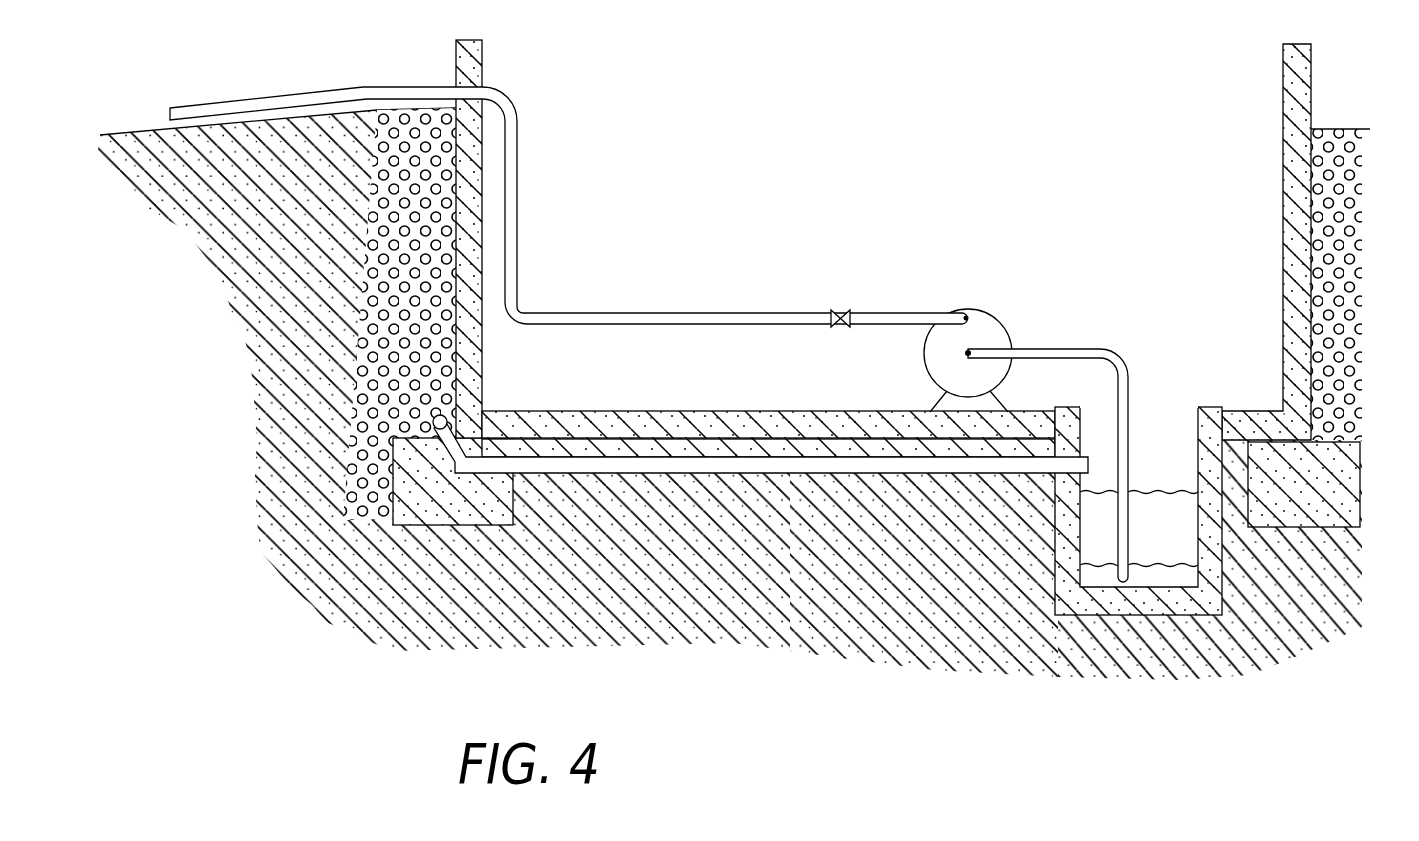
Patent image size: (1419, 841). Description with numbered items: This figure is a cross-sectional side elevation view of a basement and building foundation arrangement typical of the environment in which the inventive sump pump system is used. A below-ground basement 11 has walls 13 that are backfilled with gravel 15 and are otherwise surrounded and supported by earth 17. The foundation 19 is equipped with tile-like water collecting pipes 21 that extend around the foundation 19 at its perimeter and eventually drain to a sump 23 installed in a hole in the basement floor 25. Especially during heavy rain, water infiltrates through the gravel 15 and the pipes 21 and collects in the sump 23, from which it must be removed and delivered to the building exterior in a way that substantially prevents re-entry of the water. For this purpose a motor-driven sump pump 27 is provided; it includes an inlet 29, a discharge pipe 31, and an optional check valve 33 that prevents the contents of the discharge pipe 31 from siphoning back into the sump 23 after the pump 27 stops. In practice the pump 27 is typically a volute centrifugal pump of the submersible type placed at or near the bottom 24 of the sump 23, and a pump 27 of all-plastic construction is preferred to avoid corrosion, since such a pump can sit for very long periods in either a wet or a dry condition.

The basement 11 is at (820, 137).
The walls 13 is at (473, 60).
The gravel 15 is at (448, 180).
The earth 17 is at (297, 150).
The foundation 19 is at (477, 412).
The water collecting pipes 21 is at (573, 463).
The sump 23 is at (1195, 420).
The bottom 24 is at (1145, 583).
The basement floor 25 is at (737, 421).
The sump pump 27 is at (997, 315).
The inlet 29 is at (1130, 405).
The discharge pipe 31 is at (560, 315).
The check valve 33 is at (835, 313).